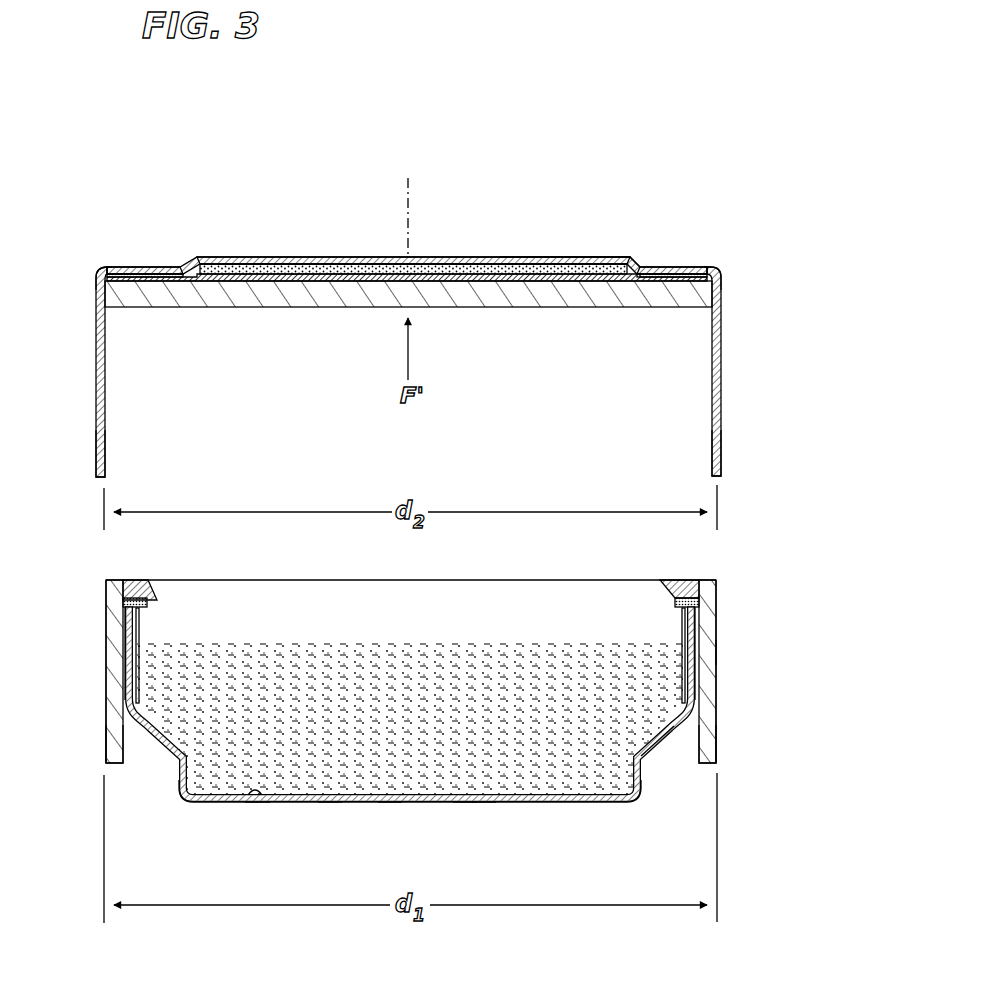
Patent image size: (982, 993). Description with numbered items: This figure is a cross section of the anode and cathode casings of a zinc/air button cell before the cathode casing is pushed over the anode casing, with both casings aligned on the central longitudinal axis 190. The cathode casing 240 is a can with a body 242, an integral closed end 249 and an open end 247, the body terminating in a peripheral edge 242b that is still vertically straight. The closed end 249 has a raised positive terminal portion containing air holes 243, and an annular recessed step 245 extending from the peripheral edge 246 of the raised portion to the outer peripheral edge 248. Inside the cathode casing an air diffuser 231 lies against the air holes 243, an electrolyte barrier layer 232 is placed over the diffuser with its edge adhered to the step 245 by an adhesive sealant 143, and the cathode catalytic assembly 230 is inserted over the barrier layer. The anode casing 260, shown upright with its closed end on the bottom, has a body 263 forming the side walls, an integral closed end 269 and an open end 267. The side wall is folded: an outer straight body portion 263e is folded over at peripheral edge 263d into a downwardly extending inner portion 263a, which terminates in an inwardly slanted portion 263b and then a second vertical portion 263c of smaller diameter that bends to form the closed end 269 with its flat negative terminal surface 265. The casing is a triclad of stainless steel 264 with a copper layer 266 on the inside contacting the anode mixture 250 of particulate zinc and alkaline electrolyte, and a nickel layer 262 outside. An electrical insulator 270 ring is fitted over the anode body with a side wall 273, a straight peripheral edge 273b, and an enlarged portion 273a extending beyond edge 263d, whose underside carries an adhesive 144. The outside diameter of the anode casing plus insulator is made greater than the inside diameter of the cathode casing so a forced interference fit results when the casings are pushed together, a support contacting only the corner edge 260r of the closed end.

The central longitudinal axis 190 is at (408, 192).
The cathode casing 240 is at (620, 254).
The closed end of cathode casing 249 is at (259, 257).
The air diffuser 231 is at (582, 257).
The air holes 243 is at (327, 264).
The annular recessed step 245 is at (132, 267).
The peripheral edge of raised terminal portion 246 is at (181, 267).
The outer peripheral edge 248 is at (98, 274).
The adhesive sealant 143 is at (709, 277).
The electrolyte barrier layer 232 is at (713, 283).
The cathode catalytic assembly 230 is at (632, 293).
The body of cathode casing 242 is at (97, 362).
The open end of cathode casing 247 is at (113, 448).
The peripheral edge of cathode casing 242b is at (721, 452).
The open end of anode casing 267 is at (273, 597).
The side wall of insulating seal 273 is at (710, 692).
The enlarged portion of insulator ring 273a is at (133, 585).
The peripheral edge of insulator ring 273b is at (107, 737).
The electrical insulator material 270 is at (107, 655).
The outer straight body portion 263e is at (716, 652).
The adhesive 144 is at (147, 602).
The anode mixture 250 is at (560, 782).
The body of anode casing 263 is at (142, 627).
The inner portion of anode casing side wall 263a is at (687, 627).
The peripheral edge of anode casing 263d is at (123, 605).
The inwardly slanted portion 263b is at (658, 740).
The second downwardly extending vertical portion 263c is at (637, 796).
The anode casing 260 is at (610, 806).
The corner edge of closed end 260r is at (188, 800).
The copper layer 266 is at (257, 803).
The nickel layer 262 is at (330, 803).
The negative terminal surface 265 is at (390, 803).
The closed end of anode casing 269 is at (465, 803).
The stainless steel 264 is at (483, 803).